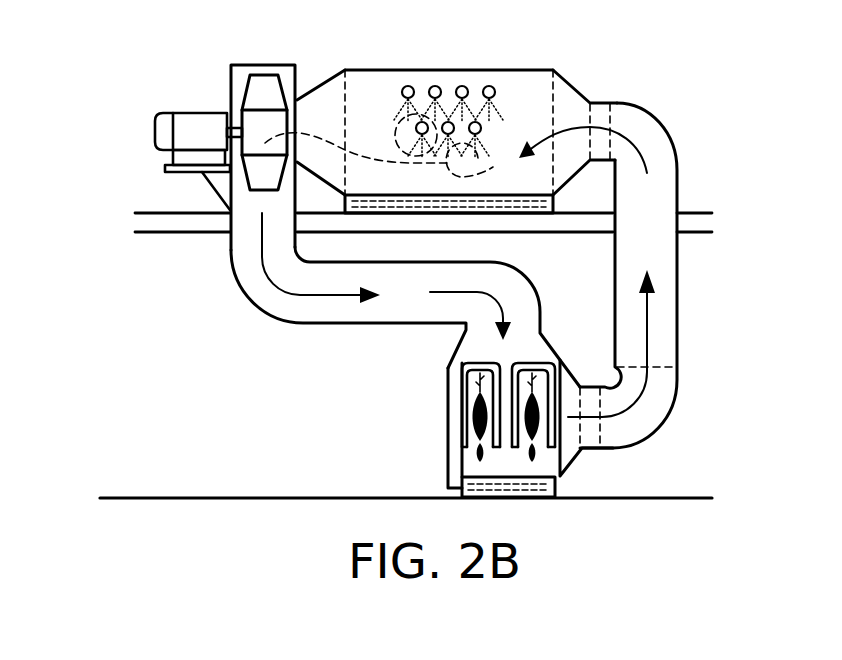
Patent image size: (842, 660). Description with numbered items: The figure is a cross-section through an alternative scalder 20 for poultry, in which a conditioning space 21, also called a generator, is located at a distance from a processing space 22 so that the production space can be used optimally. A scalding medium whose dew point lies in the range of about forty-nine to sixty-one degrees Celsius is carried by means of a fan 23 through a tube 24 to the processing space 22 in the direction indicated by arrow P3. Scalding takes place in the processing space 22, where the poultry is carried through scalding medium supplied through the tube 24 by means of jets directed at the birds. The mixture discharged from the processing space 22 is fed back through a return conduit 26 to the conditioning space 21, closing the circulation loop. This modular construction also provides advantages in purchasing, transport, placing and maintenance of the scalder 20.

The scalder 20 is at (130, 72).
The conditioning space 21 is at (447, 78).
The processing space 22 is at (472, 457).
The fan 23 is at (262, 88).
The tube 24 is at (236, 280).
The return conduit 26 is at (662, 255).
The arrow P3 is at (323, 293).